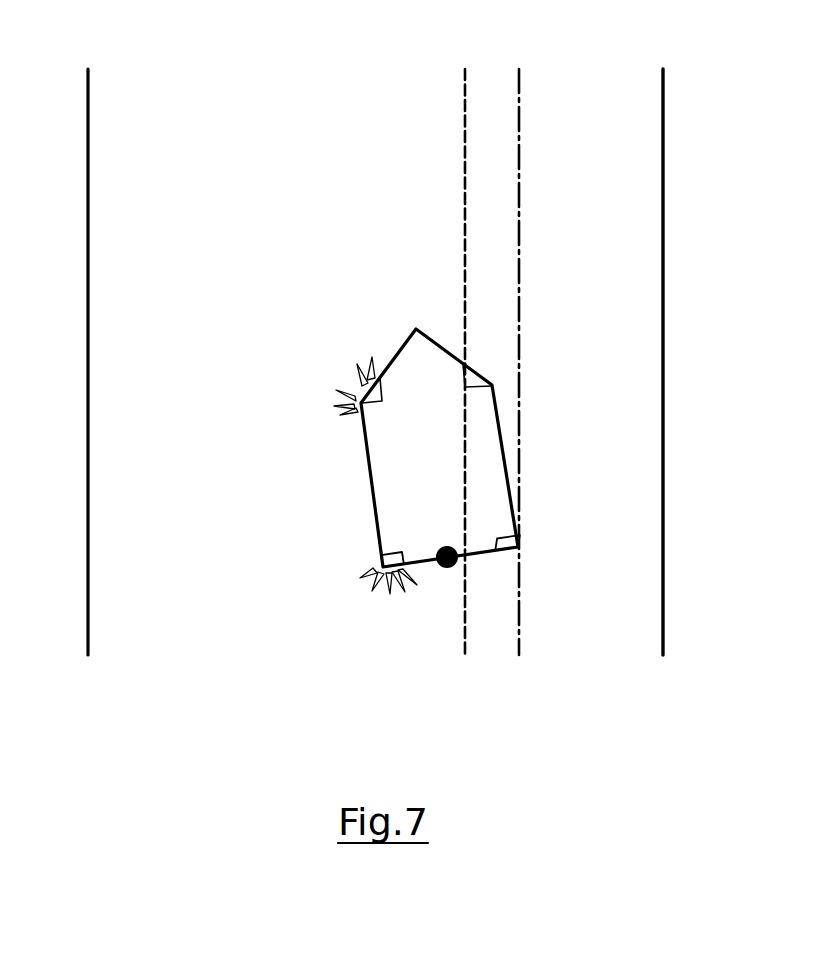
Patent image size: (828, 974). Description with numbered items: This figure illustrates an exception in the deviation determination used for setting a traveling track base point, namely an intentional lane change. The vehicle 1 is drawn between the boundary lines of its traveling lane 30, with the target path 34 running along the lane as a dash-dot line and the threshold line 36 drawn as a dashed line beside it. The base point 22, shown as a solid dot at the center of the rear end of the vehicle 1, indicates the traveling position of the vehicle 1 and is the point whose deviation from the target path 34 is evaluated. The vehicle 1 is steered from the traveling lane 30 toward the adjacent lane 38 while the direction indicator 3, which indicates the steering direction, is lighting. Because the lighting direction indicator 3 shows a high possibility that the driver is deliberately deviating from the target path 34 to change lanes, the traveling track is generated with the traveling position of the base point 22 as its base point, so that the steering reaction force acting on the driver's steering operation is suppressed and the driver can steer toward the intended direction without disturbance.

The vehicle 1 is at (503, 452).
The direction indicator 3 is at (361, 403).
The base point 22 is at (437, 567).
The traveling lane 30 is at (616, 123).
The target path 34 is at (520, 302).
The threshold line 36 is at (463, 183).
The adjacent lane 38 is at (140, 243).